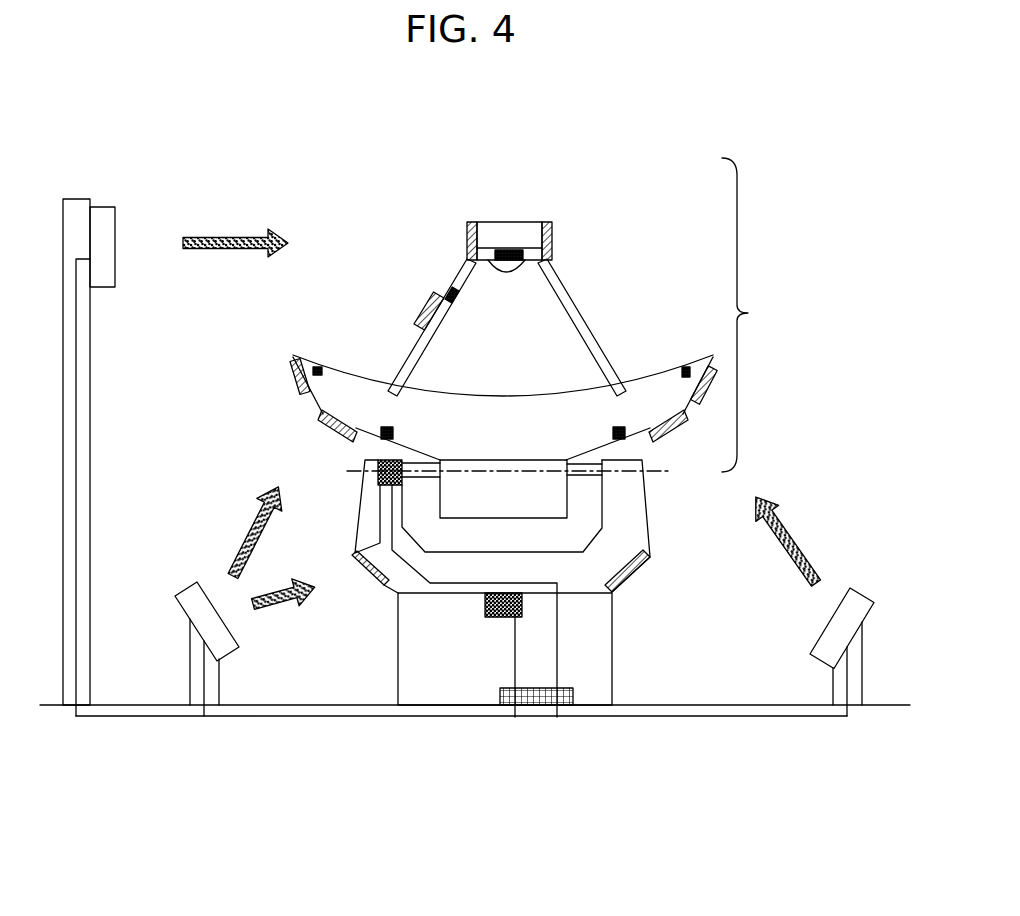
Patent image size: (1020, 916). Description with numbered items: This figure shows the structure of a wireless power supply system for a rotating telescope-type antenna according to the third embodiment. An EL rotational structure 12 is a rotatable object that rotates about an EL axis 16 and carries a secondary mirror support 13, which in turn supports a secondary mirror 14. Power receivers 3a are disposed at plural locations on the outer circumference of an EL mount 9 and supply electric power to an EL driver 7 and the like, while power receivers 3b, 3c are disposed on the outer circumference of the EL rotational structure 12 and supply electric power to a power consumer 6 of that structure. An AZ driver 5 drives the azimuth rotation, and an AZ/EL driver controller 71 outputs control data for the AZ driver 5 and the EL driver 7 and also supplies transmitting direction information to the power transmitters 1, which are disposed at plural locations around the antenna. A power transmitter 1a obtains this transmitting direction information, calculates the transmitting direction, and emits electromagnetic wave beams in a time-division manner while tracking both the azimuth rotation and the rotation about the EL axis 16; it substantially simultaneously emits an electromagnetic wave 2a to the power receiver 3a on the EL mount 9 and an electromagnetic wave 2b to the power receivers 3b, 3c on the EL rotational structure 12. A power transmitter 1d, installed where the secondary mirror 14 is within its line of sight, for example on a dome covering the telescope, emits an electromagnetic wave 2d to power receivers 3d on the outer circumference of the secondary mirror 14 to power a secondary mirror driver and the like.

The power transmitter 1 is at (816, 652).
The power transmitter 1a is at (233, 652).
The power transmitter 1d is at (115, 272).
The electromagnetic wave 2a is at (285, 607).
The electromagnetic wave 2b is at (243, 530).
The electromagnetic wave 2d is at (222, 242).
The power receiver 3a is at (355, 558).
The power receiver 3b is at (293, 362).
The power receiver 3c is at (322, 417).
The power receiver 3d is at (470, 225).
The AZ driver 5 is at (483, 617).
The power consumer 6 is at (508, 262).
The EL driver 7 is at (376, 462).
The EL mount 9 is at (650, 514).
The EL rotational structure 12 is at (751, 315).
The secondary mirror support 13 is at (587, 318).
The secondary mirror 14 is at (508, 228).
The EL axis 16 is at (656, 470).
The AZ/EL driver controller 71 is at (580, 692).